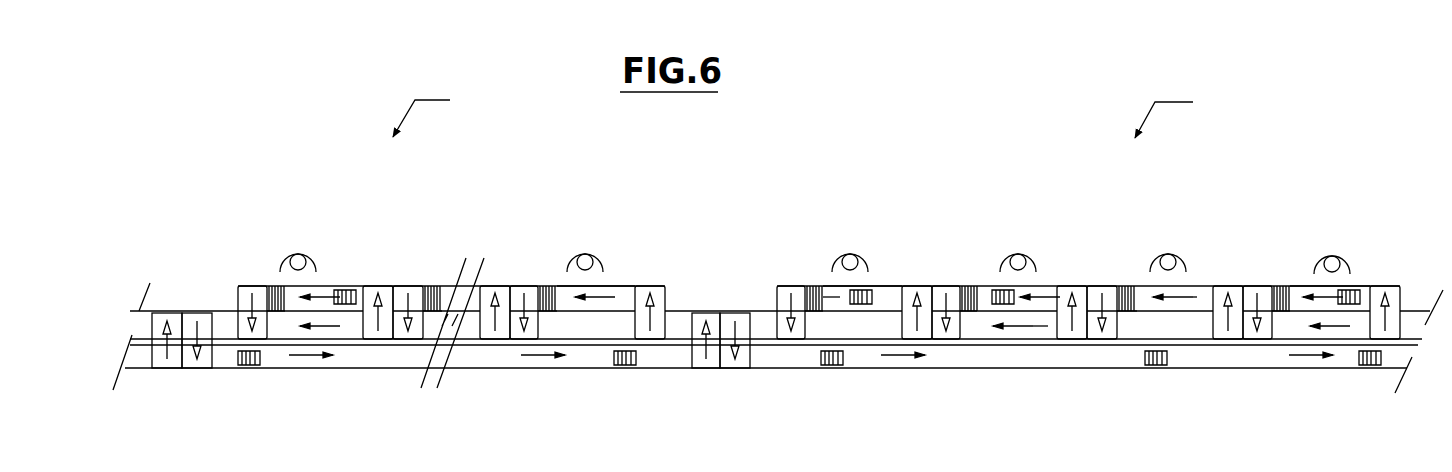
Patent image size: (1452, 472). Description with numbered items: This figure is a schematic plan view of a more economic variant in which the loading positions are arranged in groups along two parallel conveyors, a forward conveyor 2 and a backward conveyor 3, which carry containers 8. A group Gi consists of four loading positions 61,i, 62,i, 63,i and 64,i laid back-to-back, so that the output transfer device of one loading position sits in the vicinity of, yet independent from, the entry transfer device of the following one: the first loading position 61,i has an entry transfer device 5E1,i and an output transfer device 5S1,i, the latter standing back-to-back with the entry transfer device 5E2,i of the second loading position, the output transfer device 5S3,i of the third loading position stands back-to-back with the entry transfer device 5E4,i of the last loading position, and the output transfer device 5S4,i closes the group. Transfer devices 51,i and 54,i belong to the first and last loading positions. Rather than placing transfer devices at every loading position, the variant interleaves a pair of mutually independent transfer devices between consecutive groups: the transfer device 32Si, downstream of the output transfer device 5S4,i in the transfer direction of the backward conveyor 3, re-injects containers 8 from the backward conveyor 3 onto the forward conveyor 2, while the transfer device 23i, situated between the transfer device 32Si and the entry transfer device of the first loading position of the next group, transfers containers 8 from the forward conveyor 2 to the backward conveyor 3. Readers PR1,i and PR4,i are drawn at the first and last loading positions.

The forward conveyor 2 is at (480, 368).
The backward conveyor 3 is at (228, 318).
The containers 8 is at (337, 290).
The transfer device 23i is at (693, 315).
The transfer device 32Si is at (742, 313).
The group Gi is at (1164, 99).
The output transfer device 5S4,i is at (777, 287).
The entry transfer device 5E4,i is at (928, 287).
The output transfer device 5S3,i is at (952, 287).
The entry transfer device 5E2,i is at (1225, 287).
The output transfer device 5S1,i is at (1250, 287).
The entry transfer device 5E1,i is at (1377, 287).
The transfer device 54,i is at (893, 287).
The transfer device 51,i is at (1297, 287).
The loading position 64,i is at (870, 203).
The loading position 63,i is at (1048, 267).
The loading position 62,i is at (1130, 270).
The loading position 61,i is at (1298, 238).
The reader of segment 4 of group i PR4,i is at (850, 254).
The reader of segment 1 of group i PR1,i is at (1332, 257).